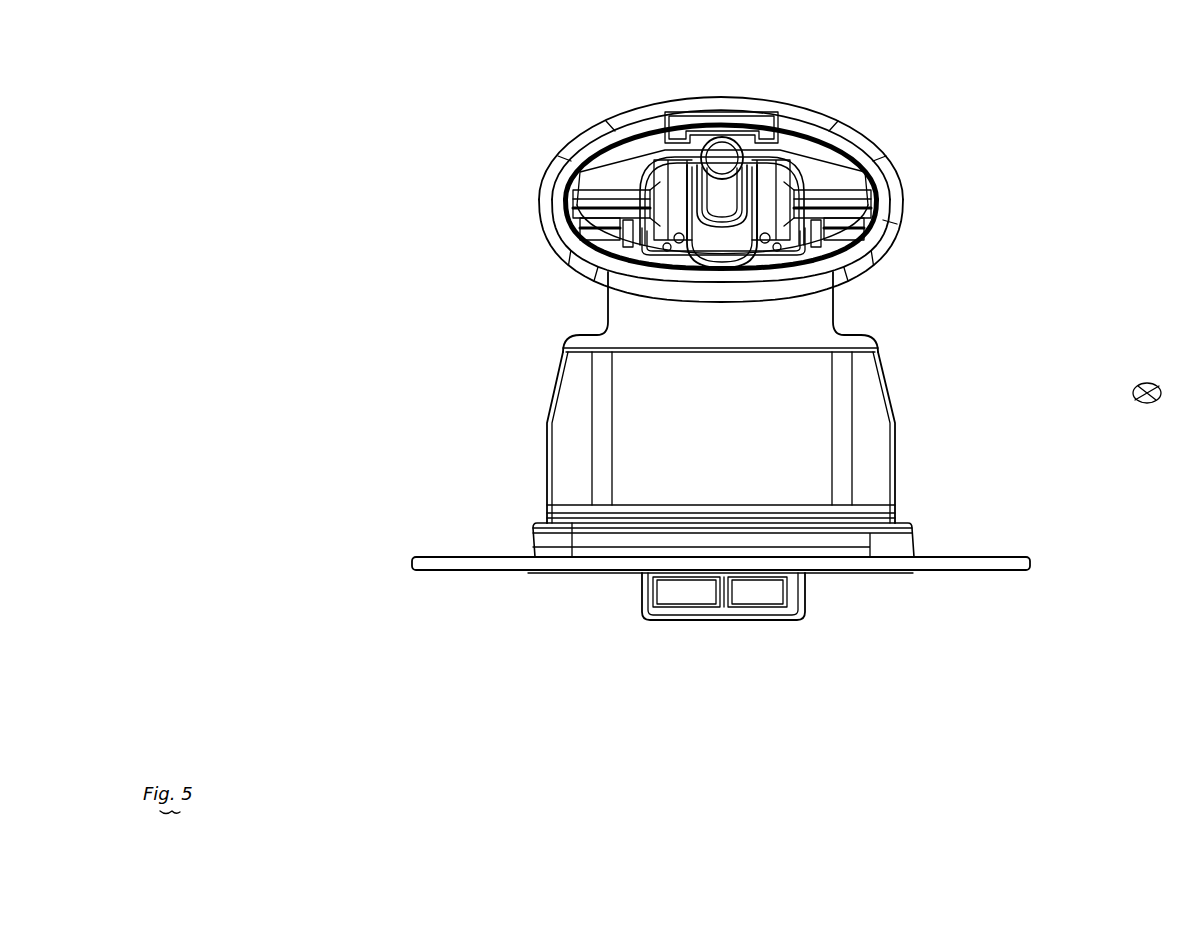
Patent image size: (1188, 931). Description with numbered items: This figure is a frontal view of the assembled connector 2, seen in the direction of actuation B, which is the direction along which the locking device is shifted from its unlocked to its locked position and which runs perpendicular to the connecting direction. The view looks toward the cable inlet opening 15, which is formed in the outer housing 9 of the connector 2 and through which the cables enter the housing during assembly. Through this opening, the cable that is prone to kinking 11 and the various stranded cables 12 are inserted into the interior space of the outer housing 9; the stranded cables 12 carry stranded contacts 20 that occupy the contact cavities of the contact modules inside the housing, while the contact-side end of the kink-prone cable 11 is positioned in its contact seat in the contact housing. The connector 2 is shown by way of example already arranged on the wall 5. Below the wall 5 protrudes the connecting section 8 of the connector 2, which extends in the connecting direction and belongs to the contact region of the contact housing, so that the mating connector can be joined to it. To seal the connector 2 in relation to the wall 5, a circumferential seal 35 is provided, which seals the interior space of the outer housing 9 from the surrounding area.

The connector 2 is at (986, 100).
The cable inlet opening 15 is at (600, 137).
The cable that is prone to kinking 11 is at (725, 142).
The stranded cables 12 is at (880, 248).
The outer housing 9 is at (806, 320).
The stranded contacts 20 is at (780, 438).
The circumferential seal 35 is at (893, 550).
The wall 5 is at (1015, 563).
The connecting section 8 is at (773, 628).
The direction of actuation B is at (1155, 393).